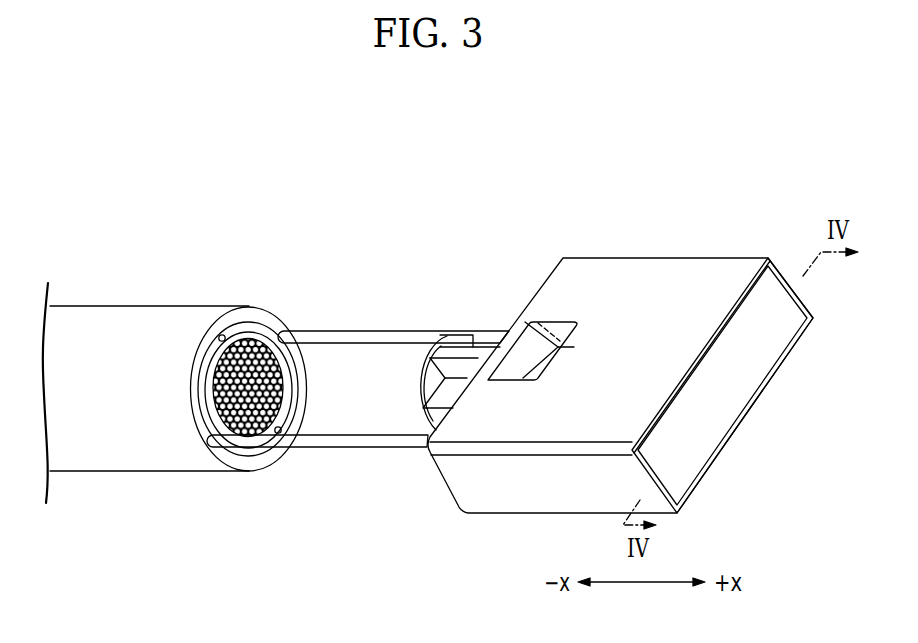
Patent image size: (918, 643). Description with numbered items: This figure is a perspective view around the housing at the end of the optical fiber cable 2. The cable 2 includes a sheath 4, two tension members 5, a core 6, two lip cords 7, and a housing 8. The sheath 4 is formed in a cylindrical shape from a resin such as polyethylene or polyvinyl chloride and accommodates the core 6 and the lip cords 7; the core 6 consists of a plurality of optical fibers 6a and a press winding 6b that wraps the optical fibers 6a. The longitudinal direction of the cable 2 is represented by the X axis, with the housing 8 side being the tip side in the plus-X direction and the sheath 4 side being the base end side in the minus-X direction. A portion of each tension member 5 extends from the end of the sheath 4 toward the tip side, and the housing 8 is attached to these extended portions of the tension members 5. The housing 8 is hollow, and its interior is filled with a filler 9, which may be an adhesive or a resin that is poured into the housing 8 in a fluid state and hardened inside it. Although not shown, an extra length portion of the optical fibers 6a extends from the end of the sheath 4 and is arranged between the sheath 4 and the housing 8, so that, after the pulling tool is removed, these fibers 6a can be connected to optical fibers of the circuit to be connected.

The optical fiber cable 2 is at (110, 287).
The sheath 4 is at (166, 456).
The tension member 5 is at (395, 331).
The core 6 is at (262, 336).
The optical fiber 6a is at (268, 380).
The press winding 6b is at (283, 366).
The lip cord 7 is at (224, 334).
The housing 8 is at (603, 265).
The filler 9 is at (735, 380).